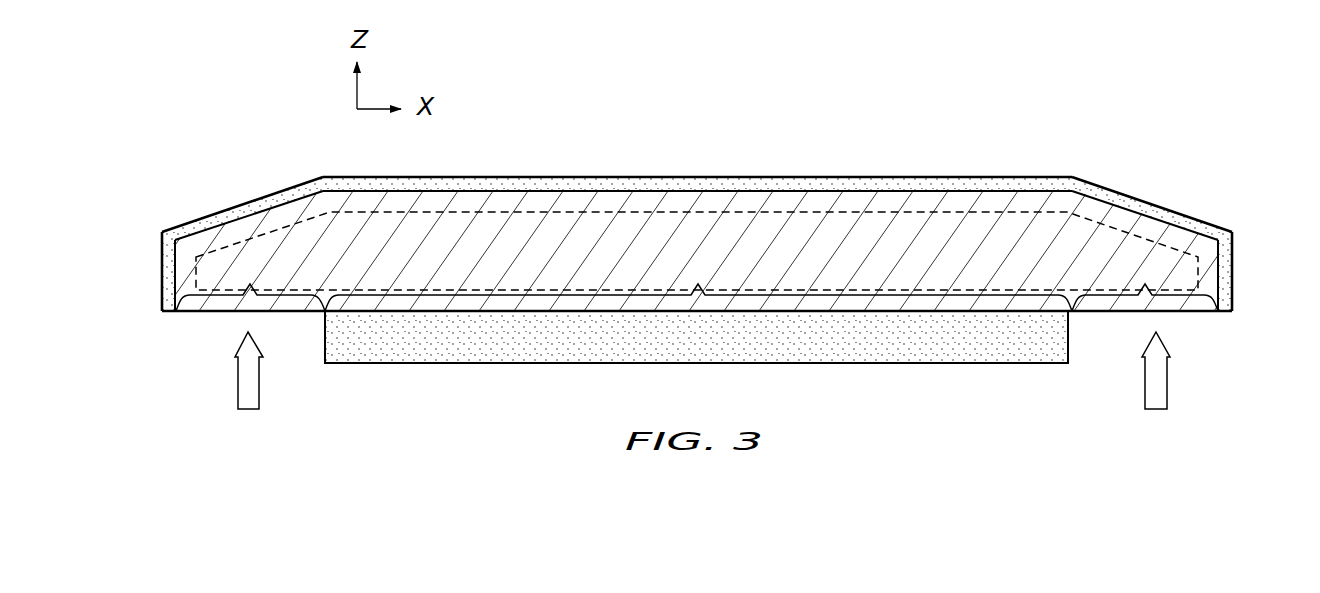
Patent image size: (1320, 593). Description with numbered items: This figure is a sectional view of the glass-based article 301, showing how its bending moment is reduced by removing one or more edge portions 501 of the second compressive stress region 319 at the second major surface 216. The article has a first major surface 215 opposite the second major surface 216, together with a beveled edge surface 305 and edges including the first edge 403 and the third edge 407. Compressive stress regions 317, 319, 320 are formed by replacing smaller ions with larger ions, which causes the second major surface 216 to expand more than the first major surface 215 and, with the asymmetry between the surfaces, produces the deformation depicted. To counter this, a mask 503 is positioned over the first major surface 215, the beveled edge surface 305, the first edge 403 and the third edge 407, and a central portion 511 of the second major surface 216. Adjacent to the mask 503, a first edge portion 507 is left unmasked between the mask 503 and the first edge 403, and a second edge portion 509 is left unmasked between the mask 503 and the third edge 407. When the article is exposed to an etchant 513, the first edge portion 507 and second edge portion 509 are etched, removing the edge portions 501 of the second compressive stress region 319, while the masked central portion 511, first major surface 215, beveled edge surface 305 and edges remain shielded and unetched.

The glass-based article 301 is at (1057, 114).
The first major surface 215 is at (573, 180).
The second major surface 216 is at (1097, 320).
The beveled edge surface 305 is at (274, 190).
The compressive stress region 320 is at (243, 228).
The first edge 403 is at (168, 272).
The third edge 407 is at (1226, 276).
The mask 503 is at (757, 177).
The second compressive stress region 319 is at (939, 302).
The compressive stress region 317 is at (847, 203).
The first edge portion 507 is at (250, 280).
The second edge portion 509 is at (1145, 281).
The central portion 511 is at (698, 281).
The edge portions 501 is at (322, 272).
The etchant 513 is at (238, 383).